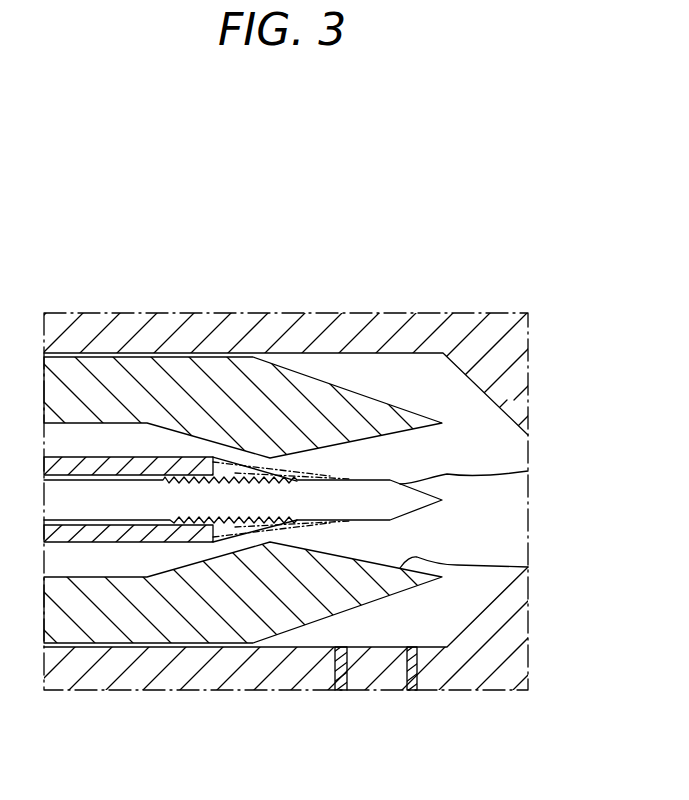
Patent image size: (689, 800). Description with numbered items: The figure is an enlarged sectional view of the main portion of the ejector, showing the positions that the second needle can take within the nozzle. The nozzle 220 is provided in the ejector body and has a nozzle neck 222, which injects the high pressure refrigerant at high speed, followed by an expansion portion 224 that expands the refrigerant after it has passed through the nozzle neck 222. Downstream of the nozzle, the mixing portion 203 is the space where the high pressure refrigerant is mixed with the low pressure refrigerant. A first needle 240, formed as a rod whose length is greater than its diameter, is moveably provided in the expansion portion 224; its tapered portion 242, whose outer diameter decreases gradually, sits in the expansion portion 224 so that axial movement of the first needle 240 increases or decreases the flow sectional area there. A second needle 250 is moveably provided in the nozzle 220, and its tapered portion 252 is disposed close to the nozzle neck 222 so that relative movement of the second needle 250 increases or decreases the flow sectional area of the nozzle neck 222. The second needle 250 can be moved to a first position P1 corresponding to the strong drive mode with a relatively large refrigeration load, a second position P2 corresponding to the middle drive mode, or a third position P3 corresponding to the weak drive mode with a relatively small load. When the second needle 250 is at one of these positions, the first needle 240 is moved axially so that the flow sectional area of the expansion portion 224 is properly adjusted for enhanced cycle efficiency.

The nozzle 220 is at (145, 372).
The nozzle neck 222 is at (270, 458).
The expansion portion 224 is at (528, 567).
The first needle 240 is at (377, 475).
The tapered portion 242 is at (528, 471).
The second needle 250 is at (92, 455).
The tapered portion 252 is at (236, 522).
The mixing portion 203 is at (490, 523).
The first position P1 is at (267, 457).
The second position P2 is at (296, 480).
The third position P3 is at (322, 480).